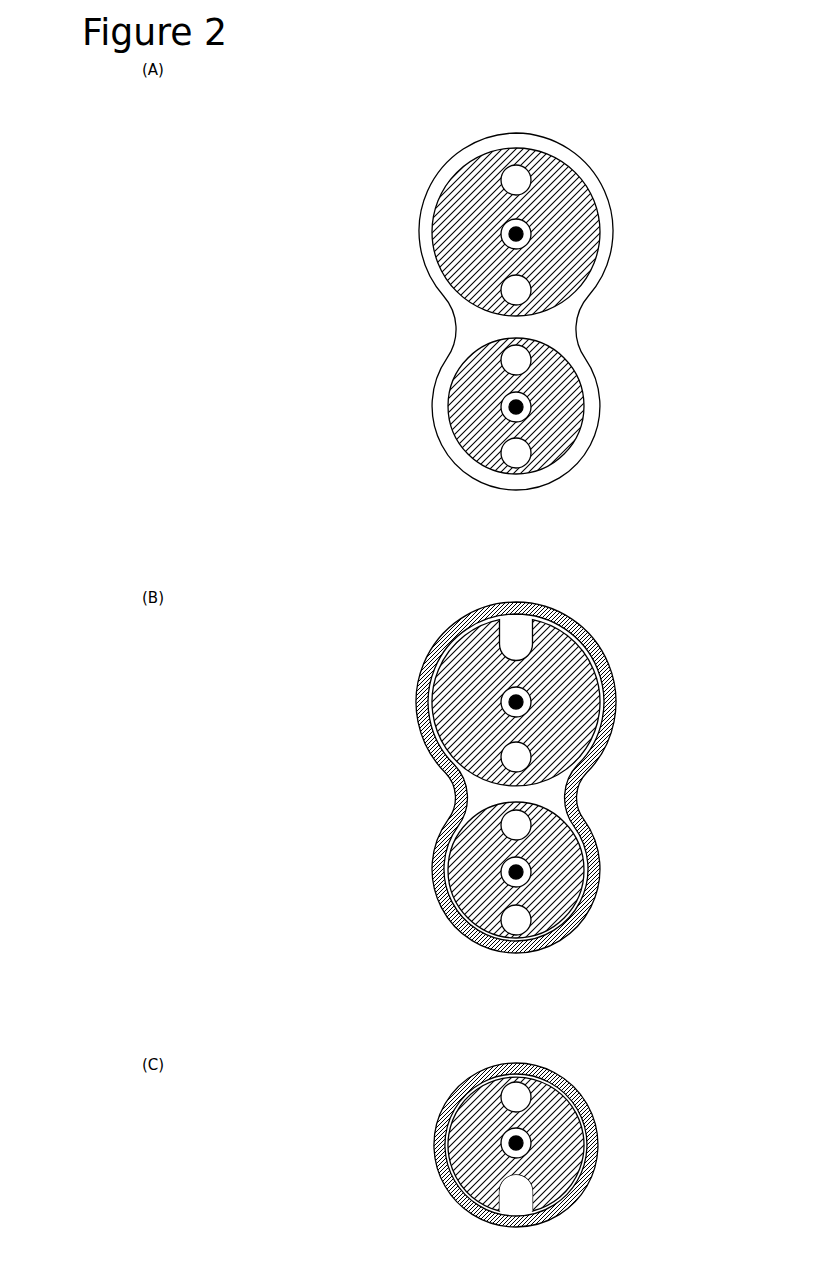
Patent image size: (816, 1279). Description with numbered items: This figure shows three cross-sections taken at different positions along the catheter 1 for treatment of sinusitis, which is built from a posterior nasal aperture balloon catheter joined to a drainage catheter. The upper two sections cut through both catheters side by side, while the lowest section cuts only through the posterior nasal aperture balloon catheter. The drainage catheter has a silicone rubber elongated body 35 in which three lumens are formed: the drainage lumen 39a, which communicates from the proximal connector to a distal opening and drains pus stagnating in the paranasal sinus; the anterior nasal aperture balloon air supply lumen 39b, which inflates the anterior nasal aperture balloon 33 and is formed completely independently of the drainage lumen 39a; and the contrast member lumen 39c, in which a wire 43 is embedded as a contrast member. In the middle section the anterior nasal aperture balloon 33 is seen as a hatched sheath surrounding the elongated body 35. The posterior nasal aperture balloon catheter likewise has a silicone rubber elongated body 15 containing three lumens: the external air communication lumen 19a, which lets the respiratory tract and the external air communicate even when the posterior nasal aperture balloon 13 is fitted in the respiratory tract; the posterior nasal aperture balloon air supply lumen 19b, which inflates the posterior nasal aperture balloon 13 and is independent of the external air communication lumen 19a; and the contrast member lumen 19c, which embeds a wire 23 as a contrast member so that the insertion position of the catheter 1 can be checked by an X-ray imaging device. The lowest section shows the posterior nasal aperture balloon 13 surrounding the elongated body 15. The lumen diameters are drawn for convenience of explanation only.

The catheter for treatment of sinusitis 1 is at (704, 214).
The posterior nasal aperture balloon 13 is at (465, 1082).
The elongated body 15 is at (460, 362).
The external air communication lumen 19a is at (520, 360).
The posterior nasal aperture balloon air supply lumen 19b is at (520, 453).
The contrast member lumen 19c is at (528, 409).
The wire 23 is at (450, 416).
The anterior nasal aperture balloon 33 is at (447, 160).
The elongated body 35 is at (437, 193).
The drainage lumen 39a is at (520, 181).
The anterior nasal aperture balloon air supply lumen 39b is at (520, 290).
The contrast member lumen 39c is at (528, 234).
The wire 43 is at (485, 244).